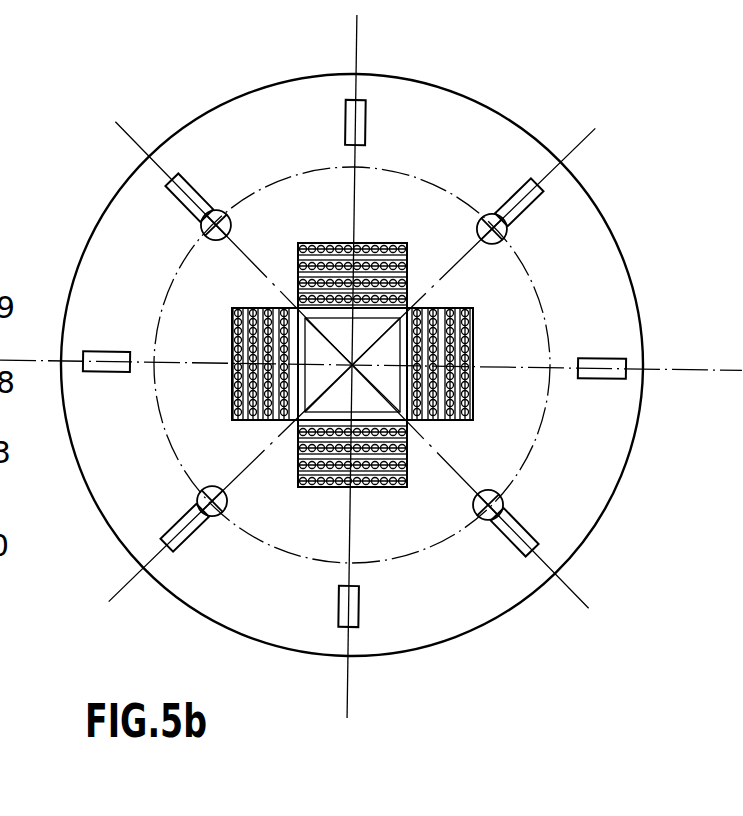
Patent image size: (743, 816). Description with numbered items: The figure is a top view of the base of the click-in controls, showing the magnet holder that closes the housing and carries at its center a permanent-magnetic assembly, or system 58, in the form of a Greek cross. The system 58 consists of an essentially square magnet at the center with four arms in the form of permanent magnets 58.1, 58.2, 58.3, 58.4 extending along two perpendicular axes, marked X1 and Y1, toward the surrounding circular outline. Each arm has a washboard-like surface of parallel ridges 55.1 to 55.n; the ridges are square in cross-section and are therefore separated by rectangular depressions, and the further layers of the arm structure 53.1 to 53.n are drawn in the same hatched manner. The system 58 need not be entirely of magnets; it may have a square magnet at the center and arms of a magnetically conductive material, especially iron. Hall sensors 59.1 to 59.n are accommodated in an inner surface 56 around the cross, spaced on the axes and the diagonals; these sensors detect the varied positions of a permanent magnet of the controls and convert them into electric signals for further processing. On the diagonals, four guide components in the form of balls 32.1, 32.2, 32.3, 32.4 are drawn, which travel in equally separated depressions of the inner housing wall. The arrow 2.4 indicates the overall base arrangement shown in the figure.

The bearing arrangement 2.4 is at (4, 65).
The inner surface 56 is at (409, 598).
The Y axis Y1 is at (360, 50).
The X axis X1 is at (713, 369).
The system 58 is at (474, 284).
The permanent magnet 58.1 is at (280, 172).
The permanent magnet 58.2 is at (407, 545).
The permanent magnet 58.3 is at (463, 313).
The permanent magnet 58.4 is at (232, 420).
The Hall sensor 59.1 is at (364, 105).
The Hall sensor 59.n is at (182, 180).
The ridge 55.1 is at (312, 243).
The ridge 55.n is at (336, 487).
The first coil 53.1 is at (407, 250).
The n-th coil 53.n is at (298, 487).
The ball 32.1 is at (217, 212).
The ball 32.2 is at (493, 213).
The ball 32.3 is at (483, 514).
The ball 32.4 is at (200, 497).